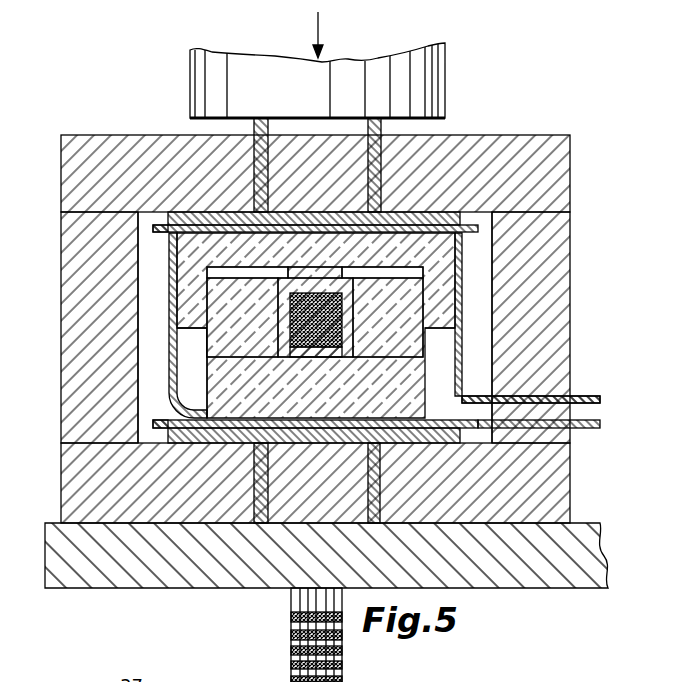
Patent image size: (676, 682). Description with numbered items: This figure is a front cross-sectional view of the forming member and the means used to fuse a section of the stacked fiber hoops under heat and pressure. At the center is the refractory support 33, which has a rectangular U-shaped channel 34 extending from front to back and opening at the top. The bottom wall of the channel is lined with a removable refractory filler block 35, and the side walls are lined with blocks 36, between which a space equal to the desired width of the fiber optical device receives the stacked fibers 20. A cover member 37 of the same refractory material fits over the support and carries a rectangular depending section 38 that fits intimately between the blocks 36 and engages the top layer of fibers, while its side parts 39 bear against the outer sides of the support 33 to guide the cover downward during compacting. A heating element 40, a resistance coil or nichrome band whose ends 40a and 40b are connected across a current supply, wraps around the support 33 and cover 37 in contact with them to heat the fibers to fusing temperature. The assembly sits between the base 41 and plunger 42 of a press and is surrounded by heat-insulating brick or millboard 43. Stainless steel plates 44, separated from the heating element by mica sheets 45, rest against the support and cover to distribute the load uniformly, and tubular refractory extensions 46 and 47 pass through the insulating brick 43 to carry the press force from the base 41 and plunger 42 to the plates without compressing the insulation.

The fibers 20 is at (316, 350).
The support 33 is at (222, 390).
The channel 34 is at (278, 338).
The bottom filler block 35 is at (337, 355).
The side filler blocks 36 is at (287, 305).
The cover member 37 is at (188, 253).
The depending section 38 is at (325, 278).
The side parts 39 is at (188, 292).
The heating element 40 is at (172, 341).
The end of heating element 40a is at (592, 397).
The end of heating element 40b is at (591, 428).
The base 41 is at (232, 579).
The plunger 42 is at (352, 63).
The insulating brick 43 is at (533, 140).
The stainless steel plates 44 is at (443, 214).
The mica sheets 45 is at (160, 225).
The tubular extension 46 is at (372, 512).
The tubular extension 47 is at (380, 150).